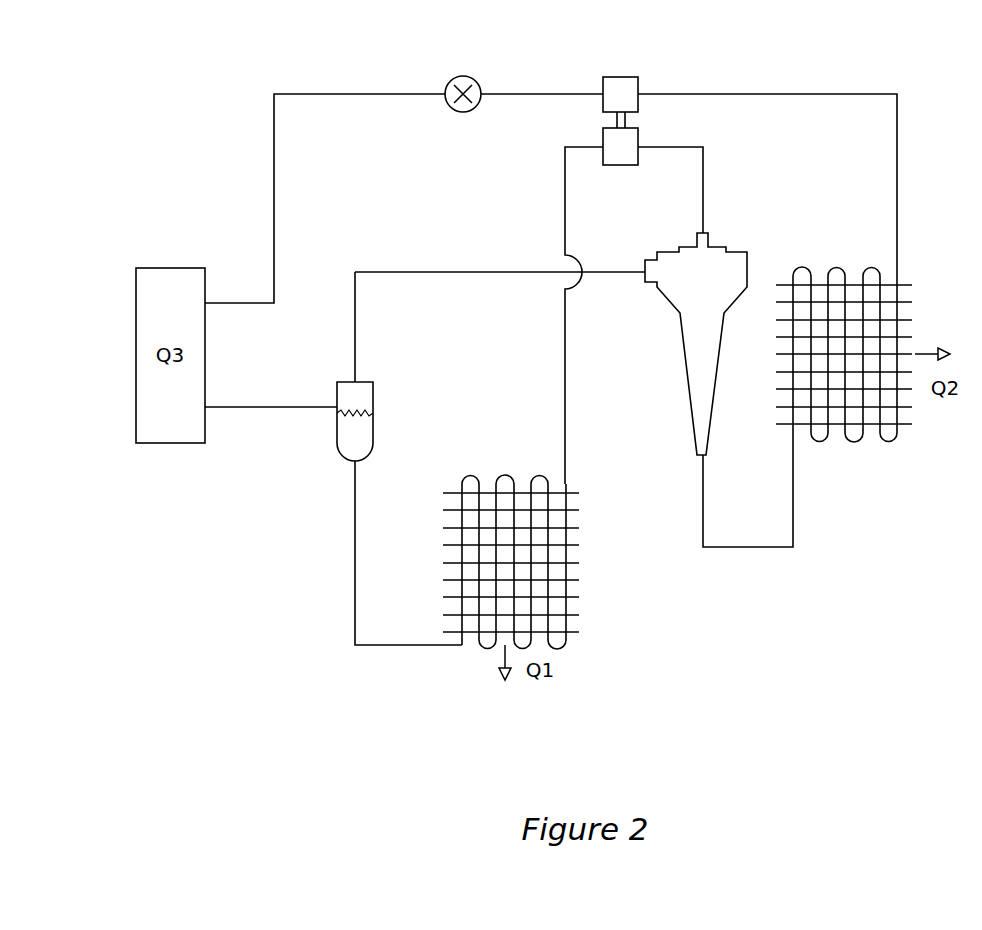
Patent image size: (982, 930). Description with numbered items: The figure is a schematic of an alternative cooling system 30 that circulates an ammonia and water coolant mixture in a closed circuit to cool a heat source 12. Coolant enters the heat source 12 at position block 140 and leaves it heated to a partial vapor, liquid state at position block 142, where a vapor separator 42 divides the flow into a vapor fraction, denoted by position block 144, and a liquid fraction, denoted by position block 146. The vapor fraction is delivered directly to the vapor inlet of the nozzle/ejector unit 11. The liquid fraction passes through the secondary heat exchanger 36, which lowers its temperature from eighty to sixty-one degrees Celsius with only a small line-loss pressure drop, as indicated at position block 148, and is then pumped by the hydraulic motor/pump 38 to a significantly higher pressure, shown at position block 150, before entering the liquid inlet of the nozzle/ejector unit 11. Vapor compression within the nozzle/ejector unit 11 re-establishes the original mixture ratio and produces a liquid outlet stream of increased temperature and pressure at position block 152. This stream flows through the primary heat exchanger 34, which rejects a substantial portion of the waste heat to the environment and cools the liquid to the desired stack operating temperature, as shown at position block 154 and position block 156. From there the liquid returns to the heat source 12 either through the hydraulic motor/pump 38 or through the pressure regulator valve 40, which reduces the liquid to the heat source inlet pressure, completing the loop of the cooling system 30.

The cooling system 30 is at (237, 577).
The heat source 12 is at (183, 272).
The position block 140 is at (325, 217).
The pressure regulator valve 40 is at (462, 76).
The position block 156 is at (542, 77).
The hydraulic motor/pump 38 is at (623, 77).
The position block 154 is at (796, 185).
The position block 148 is at (594, 315).
The position block 150 is at (699, 190).
The position block 144 is at (500, 253).
The nozzle/ejector unit 11 is at (686, 338).
The position block 152 is at (718, 490).
The primary heat exchanger 34 is at (870, 445).
The position block 142 is at (271, 425).
The vapor separator 42 is at (365, 384).
The position block 146 is at (380, 553).
The secondary heat exchanger 36 is at (485, 482).